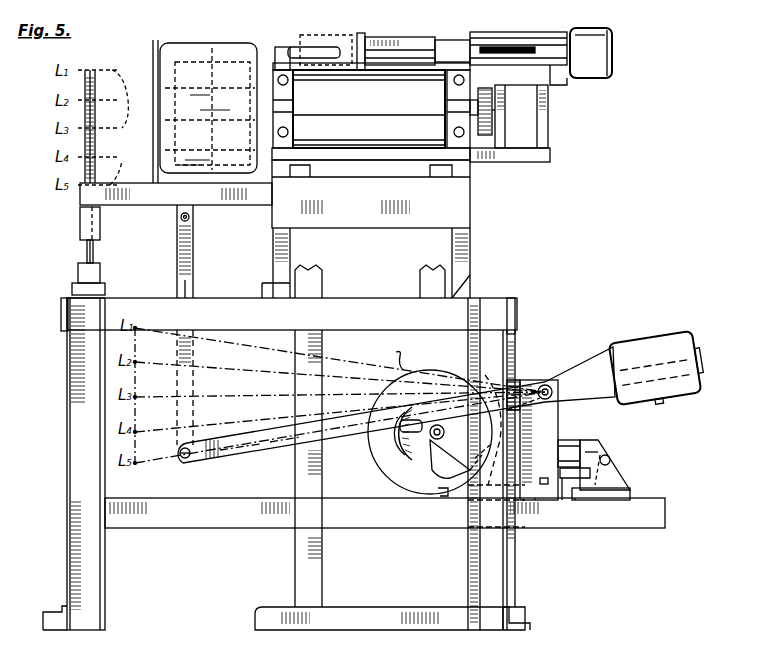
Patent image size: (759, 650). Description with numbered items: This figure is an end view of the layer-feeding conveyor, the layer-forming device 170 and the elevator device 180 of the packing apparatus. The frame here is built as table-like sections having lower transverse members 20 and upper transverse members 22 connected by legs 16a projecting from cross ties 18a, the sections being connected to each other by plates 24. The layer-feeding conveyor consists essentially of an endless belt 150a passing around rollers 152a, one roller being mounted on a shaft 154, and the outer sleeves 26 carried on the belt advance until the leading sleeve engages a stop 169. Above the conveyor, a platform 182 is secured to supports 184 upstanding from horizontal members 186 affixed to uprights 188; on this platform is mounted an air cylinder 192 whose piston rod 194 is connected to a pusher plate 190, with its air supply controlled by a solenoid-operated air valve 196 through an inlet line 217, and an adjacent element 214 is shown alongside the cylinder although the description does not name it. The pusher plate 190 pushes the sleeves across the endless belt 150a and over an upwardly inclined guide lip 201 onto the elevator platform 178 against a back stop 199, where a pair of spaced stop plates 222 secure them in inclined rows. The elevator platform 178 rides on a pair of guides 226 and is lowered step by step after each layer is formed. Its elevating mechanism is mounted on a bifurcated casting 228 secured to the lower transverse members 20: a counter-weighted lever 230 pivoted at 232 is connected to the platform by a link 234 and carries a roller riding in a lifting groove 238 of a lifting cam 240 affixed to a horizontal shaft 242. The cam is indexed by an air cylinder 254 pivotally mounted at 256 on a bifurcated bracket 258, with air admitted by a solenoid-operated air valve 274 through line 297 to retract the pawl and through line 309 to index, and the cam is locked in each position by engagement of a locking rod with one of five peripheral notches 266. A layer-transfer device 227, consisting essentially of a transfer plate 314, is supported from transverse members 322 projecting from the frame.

The legs 16a is at (70, 507).
The cross ties 18a is at (50, 622).
The lower transverse members 20 is at (198, 530).
The upper transverse members 22 is at (383, 308).
The plates 24 is at (62, 318).
The outer sleeves 26 is at (196, 62).
The endless belt 150a is at (405, 150).
The rollers 152a is at (462, 150).
The shaft 154 is at (485, 135).
The stop 169 is at (317, 50).
The layer-forming device 170 is at (392, 48).
The elevator platform 178 is at (215, 228).
The elevator device 180 is at (173, 243).
The platform 182 is at (566, 84).
The supports 184 is at (538, 125).
The horizontal members 186 is at (550, 156).
The uprights 188 is at (285, 245).
The pusher plate 190 is at (362, 34).
The air cylinder 192 is at (548, 47).
The piston rod 194 is at (405, 38).
The solenoid-operated air valve 196 is at (600, 52).
The back stop 199 is at (156, 45).
The guide lip 201 is at (276, 54).
The drive shaft housing 214 is at (523, 33).
The inlet line 217 is at (558, 82).
The stop plates 222 is at (165, 205).
The guides 226 is at (85, 256).
The layer-transfer device 227 is at (229, 43).
The bifurcated casting 228 is at (535, 500).
The counter-weighted lever 230 is at (245, 458).
The pivot 232 is at (545, 385).
The link 234 is at (190, 270).
The lifting groove 238 is at (400, 450).
The lifting cam 240 is at (410, 378).
The horizontal shaft 242 is at (437, 432).
The air cylinder 254 is at (584, 445).
The pivot 256 is at (612, 460).
The bifurcated bracket 258 is at (612, 493).
The peripheral notches 266 is at (380, 452).
The solenoid-operated air valve 274 is at (600, 452).
The line 297 is at (575, 500).
The line 309 is at (568, 444).
The transfer plate 314 is at (170, 68).
The transverse members 322 is at (345, 177).